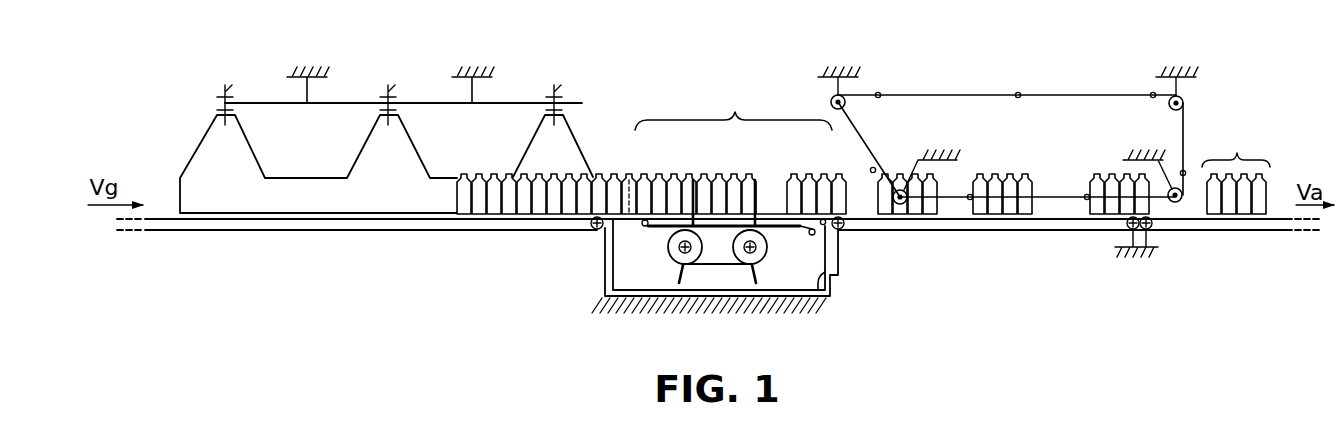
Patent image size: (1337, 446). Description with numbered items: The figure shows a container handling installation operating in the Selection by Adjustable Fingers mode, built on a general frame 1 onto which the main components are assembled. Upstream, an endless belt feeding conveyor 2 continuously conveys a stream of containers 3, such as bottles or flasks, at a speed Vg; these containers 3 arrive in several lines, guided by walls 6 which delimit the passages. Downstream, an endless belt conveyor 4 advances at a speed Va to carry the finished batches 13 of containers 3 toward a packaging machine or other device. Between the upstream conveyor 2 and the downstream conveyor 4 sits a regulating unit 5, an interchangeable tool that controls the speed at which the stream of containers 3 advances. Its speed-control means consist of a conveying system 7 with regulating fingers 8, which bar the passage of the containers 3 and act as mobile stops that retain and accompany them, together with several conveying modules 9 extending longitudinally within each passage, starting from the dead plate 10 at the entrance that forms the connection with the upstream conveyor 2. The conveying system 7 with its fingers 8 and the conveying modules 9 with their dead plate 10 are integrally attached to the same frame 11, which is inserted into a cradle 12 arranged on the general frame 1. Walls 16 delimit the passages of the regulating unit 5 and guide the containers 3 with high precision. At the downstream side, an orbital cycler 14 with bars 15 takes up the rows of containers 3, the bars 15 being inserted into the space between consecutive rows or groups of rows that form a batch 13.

The general frame 1 is at (620, 308).
The endless belt feeding conveyor 2 is at (276, 234).
The containers 3 is at (490, 176).
The endless belt conveyor 4 is at (977, 234).
The regulating unit 5 is at (733, 154).
The walls 6 is at (208, 162).
The conveying system 7 is at (651, 250).
The regulating fingers 8 is at (752, 281).
The conveying modules 9 is at (798, 231).
The dead plate 10 is at (618, 222).
The frame 11 is at (818, 297).
The cradle 12 is at (604, 297).
The batches 13 is at (1236, 170).
The cycler 14 is at (1081, 92).
The bars 15 is at (879, 92).
The walls 16 is at (771, 206).